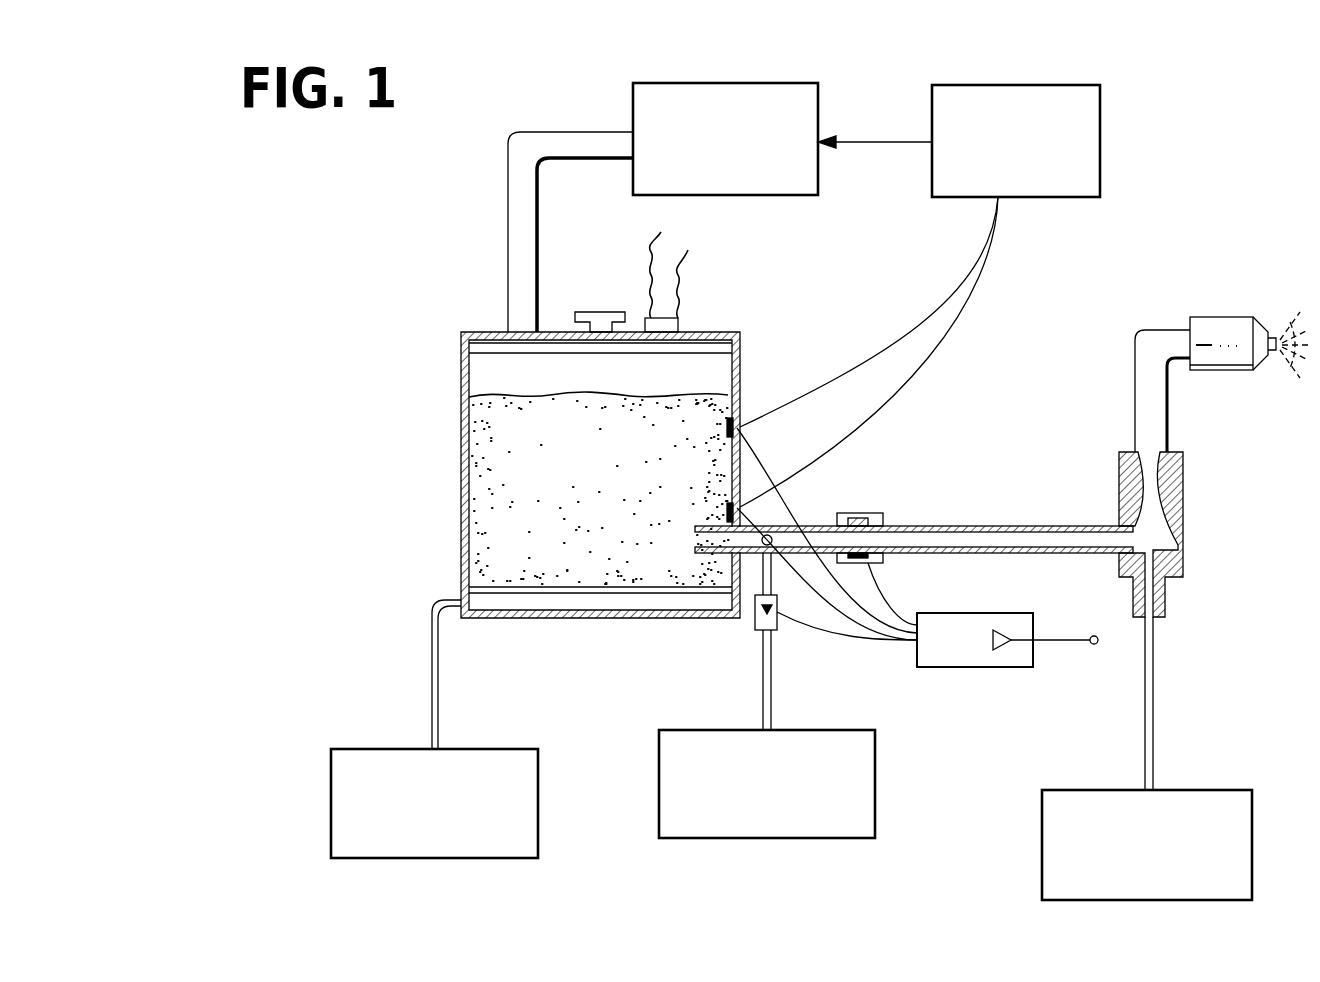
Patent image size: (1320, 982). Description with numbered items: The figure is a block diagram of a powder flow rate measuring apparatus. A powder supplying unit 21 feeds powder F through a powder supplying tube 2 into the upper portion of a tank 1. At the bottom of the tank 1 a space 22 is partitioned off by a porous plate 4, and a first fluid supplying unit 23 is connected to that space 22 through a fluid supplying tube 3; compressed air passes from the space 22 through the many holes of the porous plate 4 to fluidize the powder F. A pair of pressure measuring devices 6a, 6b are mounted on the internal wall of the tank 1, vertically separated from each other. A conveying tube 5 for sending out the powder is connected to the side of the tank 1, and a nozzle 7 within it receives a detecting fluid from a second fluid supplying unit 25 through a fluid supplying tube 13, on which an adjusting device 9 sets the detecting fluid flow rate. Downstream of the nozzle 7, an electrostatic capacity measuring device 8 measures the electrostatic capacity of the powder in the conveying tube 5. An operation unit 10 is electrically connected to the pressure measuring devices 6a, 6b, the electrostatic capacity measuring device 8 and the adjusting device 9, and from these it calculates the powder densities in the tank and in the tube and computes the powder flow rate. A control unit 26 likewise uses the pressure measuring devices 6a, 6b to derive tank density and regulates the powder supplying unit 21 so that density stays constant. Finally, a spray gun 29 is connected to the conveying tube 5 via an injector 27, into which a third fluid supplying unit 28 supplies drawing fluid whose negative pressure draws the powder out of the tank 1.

The tank 1 is at (461, 527).
The powder supplying tube 2 is at (508, 292).
The fluid supplying tube 3 is at (432, 665).
The porous plate 4 is at (582, 588).
The conveying tube 5 is at (815, 526).
The pressure measuring device 6a is at (740, 412).
The pressure measuring device 6b is at (740, 505).
The nozzle 7 is at (778, 550).
The electrostatic capacity measuring device 8 is at (858, 513).
The adjusting device 9 is at (755, 615).
The operation unit 10 is at (950, 613).
The fluid supplying tube 13 is at (771, 677).
The powder supplying unit 21 is at (633, 97).
The space 22 is at (506, 598).
The first fluid supplying unit 23 is at (331, 797).
The second fluid supplying unit 25 is at (875, 782).
The control unit 26 is at (1100, 142).
The injector 27 is at (1119, 485).
The third fluid supplying unit 28 is at (1042, 858).
The spray gun 29 is at (1218, 317).